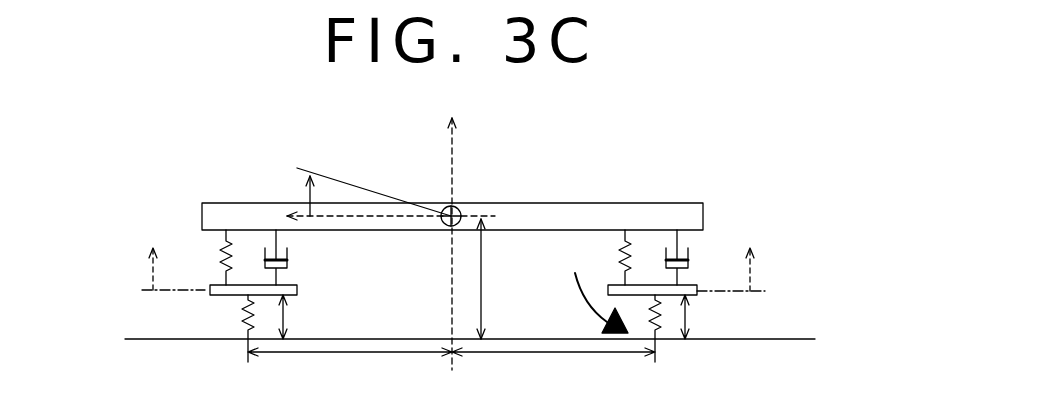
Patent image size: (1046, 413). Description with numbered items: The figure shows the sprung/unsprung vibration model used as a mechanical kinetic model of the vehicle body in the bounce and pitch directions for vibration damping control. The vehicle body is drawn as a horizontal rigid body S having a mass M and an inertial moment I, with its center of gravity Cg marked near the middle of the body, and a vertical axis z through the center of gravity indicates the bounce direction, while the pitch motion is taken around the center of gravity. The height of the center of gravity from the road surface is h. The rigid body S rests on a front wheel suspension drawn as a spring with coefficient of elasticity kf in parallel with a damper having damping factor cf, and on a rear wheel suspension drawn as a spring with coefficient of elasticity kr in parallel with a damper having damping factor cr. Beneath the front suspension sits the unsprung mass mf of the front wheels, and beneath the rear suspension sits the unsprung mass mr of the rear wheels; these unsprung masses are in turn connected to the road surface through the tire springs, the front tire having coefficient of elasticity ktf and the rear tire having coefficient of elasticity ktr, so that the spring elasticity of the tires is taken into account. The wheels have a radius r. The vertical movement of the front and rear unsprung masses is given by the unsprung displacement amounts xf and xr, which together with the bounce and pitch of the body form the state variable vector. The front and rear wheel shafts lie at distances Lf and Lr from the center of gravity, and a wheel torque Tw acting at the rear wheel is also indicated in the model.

The rigid body S is at (656, 204).
The center of gravity Cg is at (460, 208).
The bounce displacement z is at (441, 243).
The height of the center of gravity h is at (490, 279).
The coefficient of elasticity of the front wheel suspension kf is at (208, 257).
The damping factor of the front wheel suspension cf is at (296, 257).
The unsprung mass of the front wheels mf is at (210, 293).
The coefficient of elasticity of the front wheel tires ktf is at (229, 328).
The coefficient of elasticity of the rear wheel suspension kr is at (610, 257).
The damping factor of the rear wheel suspension cr is at (694, 257).
The unsprung mass of the rear wheels mr is at (697, 293).
The coefficient of elasticity of the rear wheel tires ktr is at (675, 336).
The radius of the wheels r is at (491, 317).
The unsprung displacement amount of the front wheels xf is at (162, 269).
The unsprung displacement amount of the rear wheels xr is at (739, 269).
The wheel torque Tw is at (581, 303).
The distance from the center of gravity to the front wheel shaft Lf is at (350, 367).
The distance from the center of gravity to the rear wheel shaft Lr is at (553, 367).